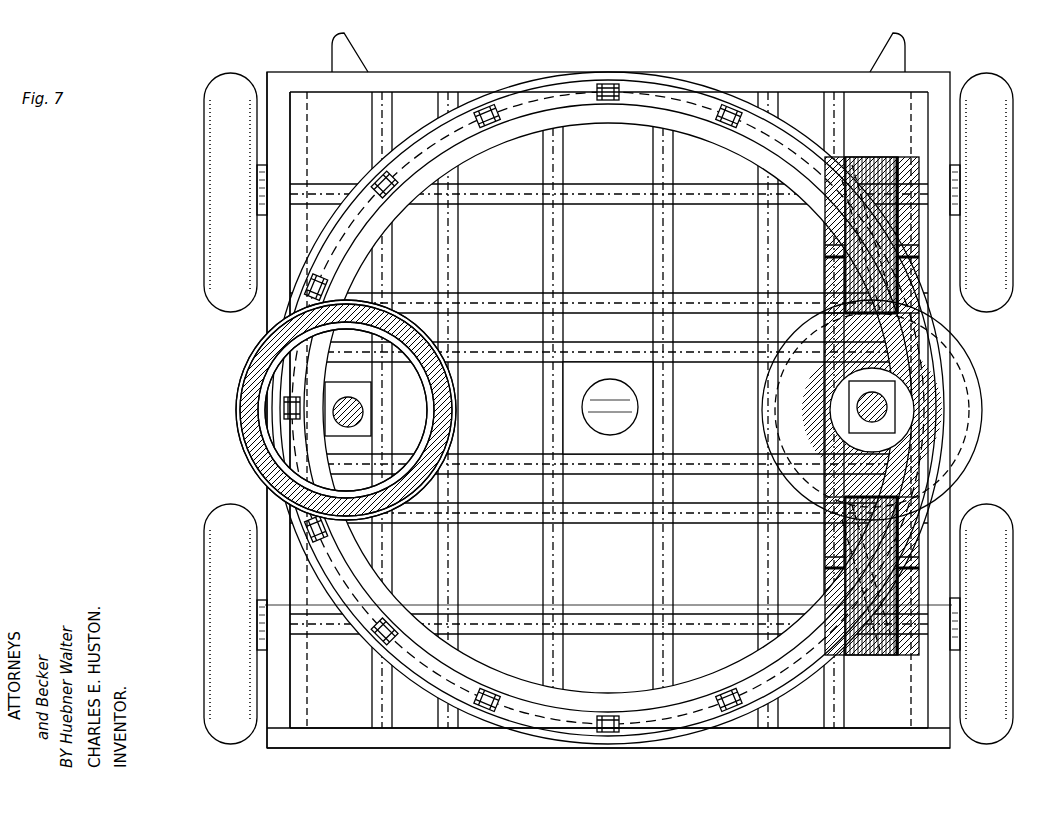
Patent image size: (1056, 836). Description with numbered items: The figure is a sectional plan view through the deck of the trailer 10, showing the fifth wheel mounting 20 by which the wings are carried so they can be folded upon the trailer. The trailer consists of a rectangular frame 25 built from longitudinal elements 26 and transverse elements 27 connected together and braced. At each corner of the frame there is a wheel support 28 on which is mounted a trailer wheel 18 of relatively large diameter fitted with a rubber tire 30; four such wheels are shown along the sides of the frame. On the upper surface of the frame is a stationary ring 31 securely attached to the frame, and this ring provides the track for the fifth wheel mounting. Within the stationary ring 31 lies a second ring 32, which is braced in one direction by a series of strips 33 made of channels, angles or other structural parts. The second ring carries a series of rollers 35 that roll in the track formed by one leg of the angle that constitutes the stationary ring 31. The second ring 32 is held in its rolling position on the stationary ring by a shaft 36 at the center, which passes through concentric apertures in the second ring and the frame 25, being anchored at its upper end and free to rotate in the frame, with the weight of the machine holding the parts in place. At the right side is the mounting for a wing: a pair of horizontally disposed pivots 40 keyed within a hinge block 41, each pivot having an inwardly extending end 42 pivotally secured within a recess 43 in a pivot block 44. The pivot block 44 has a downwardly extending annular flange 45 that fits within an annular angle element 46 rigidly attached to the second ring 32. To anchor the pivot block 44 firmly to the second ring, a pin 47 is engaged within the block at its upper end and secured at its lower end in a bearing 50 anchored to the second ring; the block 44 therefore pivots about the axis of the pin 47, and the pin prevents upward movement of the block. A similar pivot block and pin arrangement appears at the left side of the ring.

The trailer 10 is at (942, 68).
The wheels 18 is at (204, 135).
The fifth wheel mounting 20 is at (658, 88).
The rectangular frame 25 is at (379, 751).
The longitudinal elements 26 is at (300, 690).
The transverse elements 27 is at (422, 74).
The wheel support 28 is at (306, 138).
The rubber tire 30 is at (214, 270).
The stationary ring 31 is at (583, 736).
The second ring 32 is at (583, 696).
The strips 33 is at (440, 272).
The rollers 35 is at (606, 77).
The shaft 36 is at (615, 426).
The pivots 40 is at (876, 164).
The hinge block 41 is at (840, 156).
The inwardly extending end 42 is at (826, 246).
The recess 43 is at (846, 272).
The pivot block 44 is at (248, 361).
The annular flange 45 is at (244, 409).
The annular angle element 46 is at (248, 464).
The pin 47 is at (350, 398).
The bearing 50 is at (372, 412).